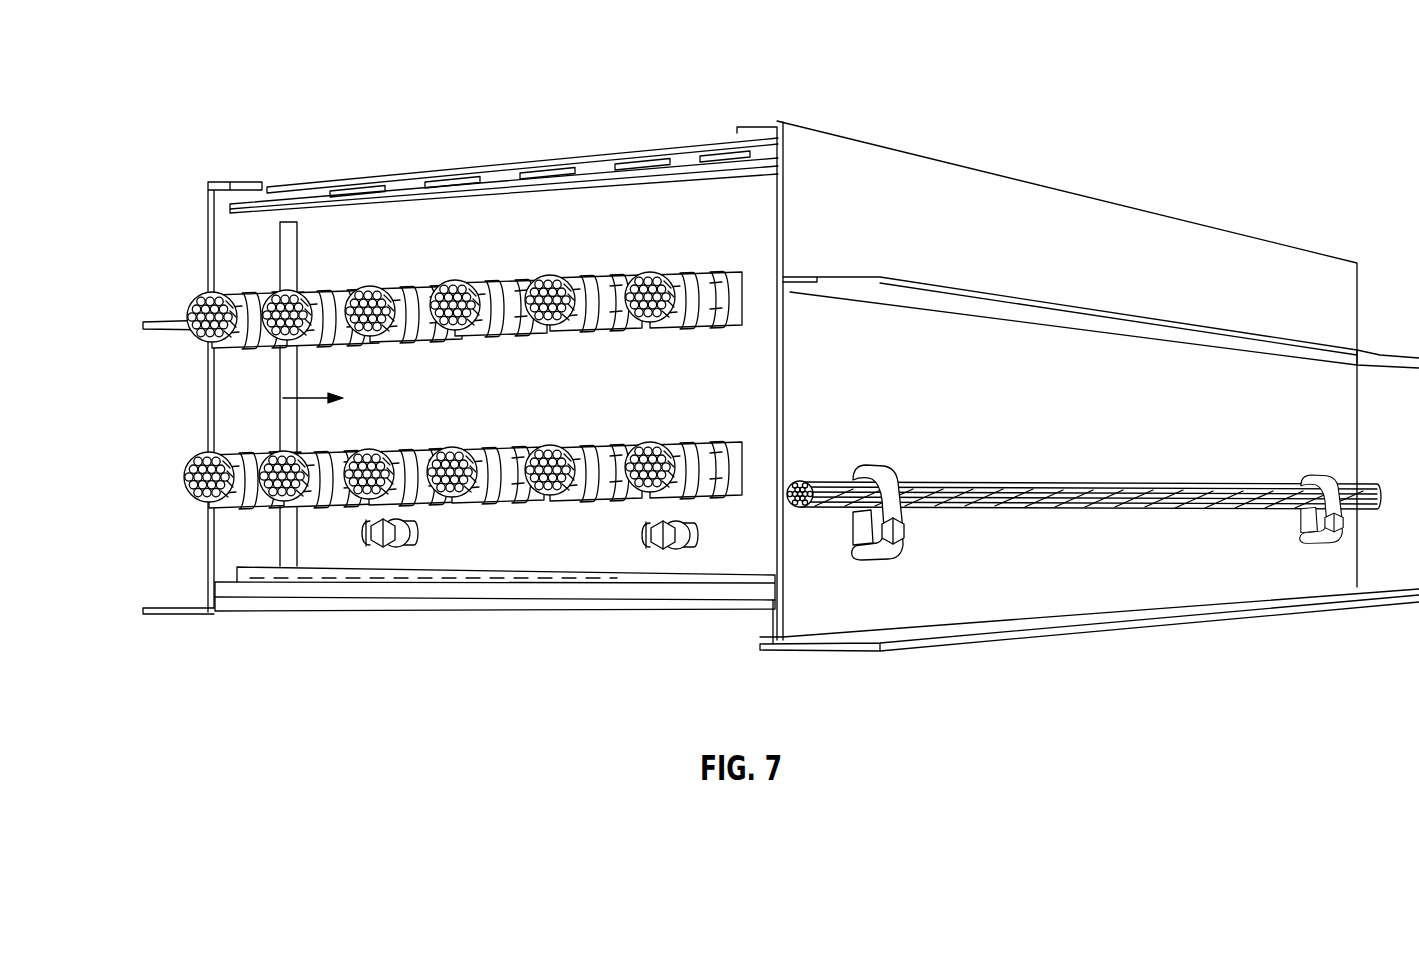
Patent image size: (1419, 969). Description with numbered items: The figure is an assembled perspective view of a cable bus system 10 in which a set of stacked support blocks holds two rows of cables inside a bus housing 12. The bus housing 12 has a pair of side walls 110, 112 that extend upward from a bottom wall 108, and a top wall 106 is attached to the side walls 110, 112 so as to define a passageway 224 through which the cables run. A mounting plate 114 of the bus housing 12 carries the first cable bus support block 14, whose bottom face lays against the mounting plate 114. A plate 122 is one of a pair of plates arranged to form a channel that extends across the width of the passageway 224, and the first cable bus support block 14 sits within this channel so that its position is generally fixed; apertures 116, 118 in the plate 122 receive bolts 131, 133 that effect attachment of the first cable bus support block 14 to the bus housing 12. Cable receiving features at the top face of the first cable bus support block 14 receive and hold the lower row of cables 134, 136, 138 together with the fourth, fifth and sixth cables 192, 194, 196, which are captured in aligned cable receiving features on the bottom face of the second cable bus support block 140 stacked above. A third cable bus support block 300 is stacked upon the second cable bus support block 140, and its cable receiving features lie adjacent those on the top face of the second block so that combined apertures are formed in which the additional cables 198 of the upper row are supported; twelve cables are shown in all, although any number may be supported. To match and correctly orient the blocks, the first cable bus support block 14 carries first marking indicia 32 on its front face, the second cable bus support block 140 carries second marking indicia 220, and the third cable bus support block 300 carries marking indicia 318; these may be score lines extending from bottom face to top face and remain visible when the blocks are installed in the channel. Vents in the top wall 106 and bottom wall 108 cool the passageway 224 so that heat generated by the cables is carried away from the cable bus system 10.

The cable bus system 10 is at (258, 122).
The bus housing 12 is at (683, 150).
The first cable bus support block 14 is at (458, 552).
The first marking indicia 32 is at (293, 527).
The top wall 106 is at (499, 163).
The bottom wall 108 is at (722, 620).
The side wall 110 is at (187, 422).
The side wall 112 is at (1051, 489).
The mounting plate 114 is at (448, 582).
The aperture 116 is at (368, 543).
The aperture 118 is at (657, 552).
The plate 122 is at (560, 545).
The bolt 131 is at (383, 545).
The bolt 133 is at (663, 553).
The cable 134 is at (190, 490).
The cable 136 is at (263, 510).
The cable 138 is at (350, 505).
The second cable bus support block 140 is at (445, 471).
The fourth cable 192 is at (468, 507).
The fifth cable 194 is at (573, 503).
The sixth cable 196 is at (690, 492).
The additional cables 198 is at (195, 295).
The second marking indicia 220 is at (283, 383).
The passageway 224 is at (287, 383).
The third cable bus support block 300 is at (748, 220).
The marking indicia 318 is at (295, 255).